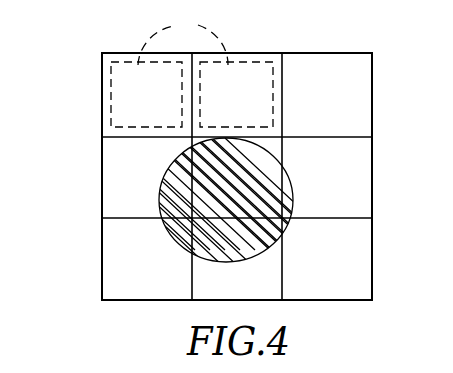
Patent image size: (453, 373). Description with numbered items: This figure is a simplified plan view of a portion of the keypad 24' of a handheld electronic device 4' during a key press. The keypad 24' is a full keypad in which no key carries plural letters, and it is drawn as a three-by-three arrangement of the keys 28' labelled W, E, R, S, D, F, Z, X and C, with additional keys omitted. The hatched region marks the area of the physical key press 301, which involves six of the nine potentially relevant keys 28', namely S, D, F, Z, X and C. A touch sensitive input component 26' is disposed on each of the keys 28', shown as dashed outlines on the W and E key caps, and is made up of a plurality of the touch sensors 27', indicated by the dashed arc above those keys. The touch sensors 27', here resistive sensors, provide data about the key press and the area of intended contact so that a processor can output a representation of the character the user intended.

The handheld electronic device 4' is at (197, 176).
The keypad 24' is at (194, 186).
The touch sensitive input component 26' is at (164, 90).
The touch sensor 27' is at (183, 37).
The keys 28' is at (352, 218).
The physical key press 301 is at (160, 210).